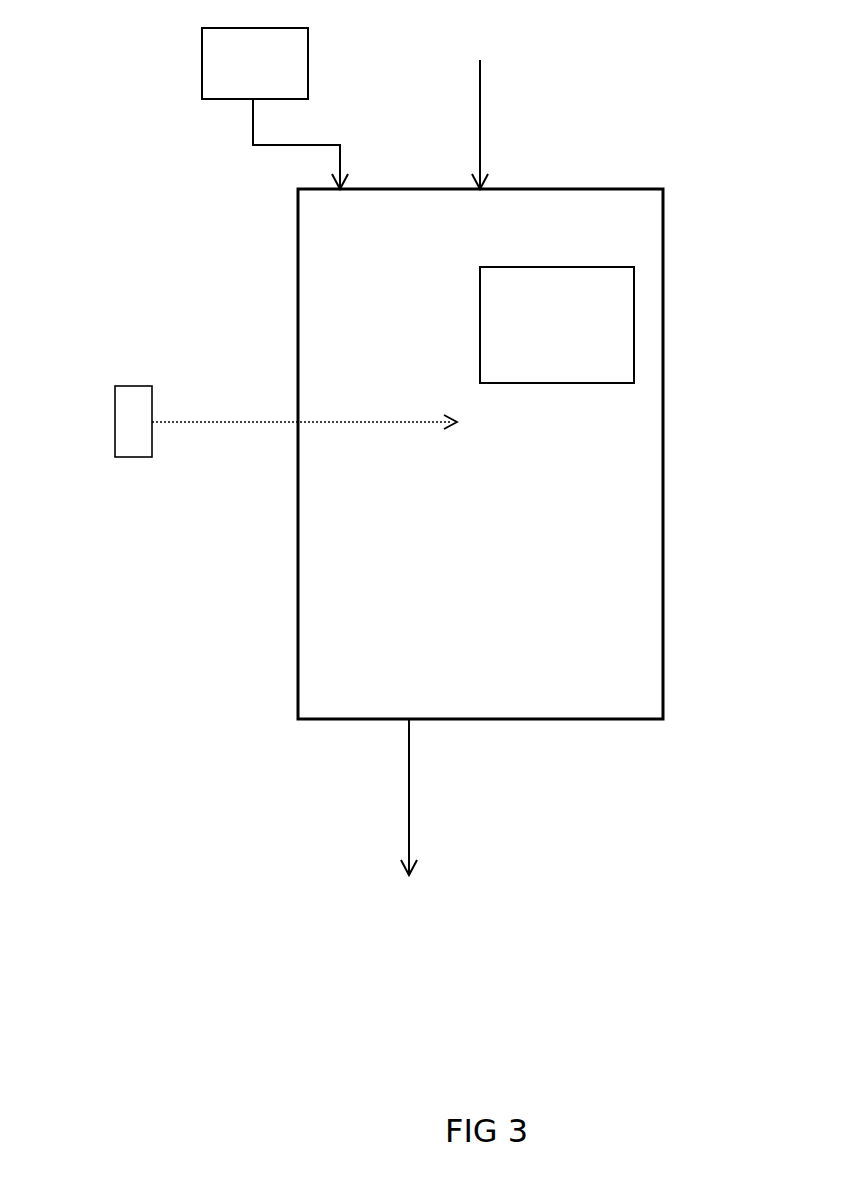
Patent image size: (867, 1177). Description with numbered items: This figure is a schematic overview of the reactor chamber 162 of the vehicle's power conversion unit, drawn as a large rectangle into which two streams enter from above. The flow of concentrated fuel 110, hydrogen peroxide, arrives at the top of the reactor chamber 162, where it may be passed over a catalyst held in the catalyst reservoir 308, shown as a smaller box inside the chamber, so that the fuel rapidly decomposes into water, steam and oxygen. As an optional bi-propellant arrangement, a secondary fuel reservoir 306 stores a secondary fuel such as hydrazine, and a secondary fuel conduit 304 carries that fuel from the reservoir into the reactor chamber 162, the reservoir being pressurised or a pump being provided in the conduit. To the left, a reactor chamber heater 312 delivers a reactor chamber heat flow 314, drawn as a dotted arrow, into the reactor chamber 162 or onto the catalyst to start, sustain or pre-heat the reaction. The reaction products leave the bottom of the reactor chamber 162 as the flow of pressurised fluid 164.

The flow of concentrated fuel 110 is at (480, 127).
The reactor chamber 162 is at (298, 286).
The flow of pressurised fluid 164 is at (409, 797).
The secondary fuel conduit 304 is at (253, 117).
The secondary fuel reservoir 306 is at (202, 30).
The catalyst reservoir 308 is at (634, 290).
The reactor chamber heater 312 is at (134, 457).
The reactor chamber heat flow 314 is at (279, 422).